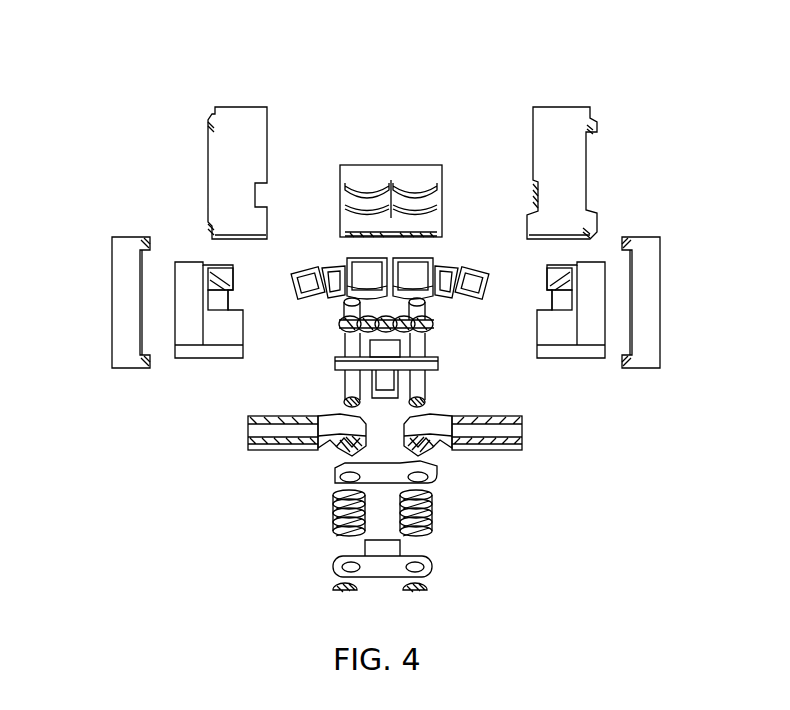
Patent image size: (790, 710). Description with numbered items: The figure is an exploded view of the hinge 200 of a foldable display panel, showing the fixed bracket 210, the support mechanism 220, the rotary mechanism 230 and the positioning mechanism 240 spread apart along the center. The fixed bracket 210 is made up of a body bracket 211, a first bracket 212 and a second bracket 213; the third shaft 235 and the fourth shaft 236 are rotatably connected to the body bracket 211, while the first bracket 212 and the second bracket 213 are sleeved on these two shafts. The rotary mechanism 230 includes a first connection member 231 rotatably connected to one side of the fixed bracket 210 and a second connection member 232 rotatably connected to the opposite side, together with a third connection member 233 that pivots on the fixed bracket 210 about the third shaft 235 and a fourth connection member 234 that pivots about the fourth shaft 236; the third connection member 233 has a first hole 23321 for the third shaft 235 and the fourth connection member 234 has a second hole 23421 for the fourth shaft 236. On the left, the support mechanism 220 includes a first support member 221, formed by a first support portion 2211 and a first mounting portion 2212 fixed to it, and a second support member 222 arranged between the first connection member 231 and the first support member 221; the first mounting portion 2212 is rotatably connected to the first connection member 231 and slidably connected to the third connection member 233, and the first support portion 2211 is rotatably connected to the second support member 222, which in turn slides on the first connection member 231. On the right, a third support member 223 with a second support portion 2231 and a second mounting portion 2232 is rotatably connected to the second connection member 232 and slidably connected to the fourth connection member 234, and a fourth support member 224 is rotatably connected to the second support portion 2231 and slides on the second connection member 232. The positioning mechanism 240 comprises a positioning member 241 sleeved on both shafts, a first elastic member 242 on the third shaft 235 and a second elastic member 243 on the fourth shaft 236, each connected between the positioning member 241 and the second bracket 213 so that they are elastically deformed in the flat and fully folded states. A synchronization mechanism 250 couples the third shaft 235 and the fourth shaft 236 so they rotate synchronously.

The hinge 200 is at (125, 46).
The fixed bracket 210 is at (400, 343).
The body bracket 211 is at (408, 160).
The first bracket 212 is at (436, 360).
The second bracket 213 is at (432, 563).
The support mechanism 220 is at (386, 315).
The first support member 221 is at (120, 489).
The first support portion 2211 is at (128, 345).
The first mounting portion 2212 is at (192, 353).
The second support member 222 is at (227, 168).
The third support member 223 is at (712, 489).
The second support portion 2231 is at (642, 343).
The second mounting portion 2232 is at (580, 352).
The fourth support member 224 is at (570, 168).
The rotary mechanism 230 is at (389, 167).
The first connection member 231 is at (330, 264).
The second connection member 232 is at (443, 264).
The third connection member 233 is at (252, 433).
The first hole 23321 is at (350, 443).
The fourth connection member 234 is at (518, 430).
The second hole 23421 is at (425, 445).
The third shaft 235 is at (345, 400).
The fourth shaft 236 is at (425, 400).
The positioning mechanism 240 is at (382, 499).
The positioning member 241 is at (337, 477).
The first elastic member 242 is at (333, 528).
The second elastic member 243 is at (432, 528).
The synchronization mechanism 250 is at (335, 328).